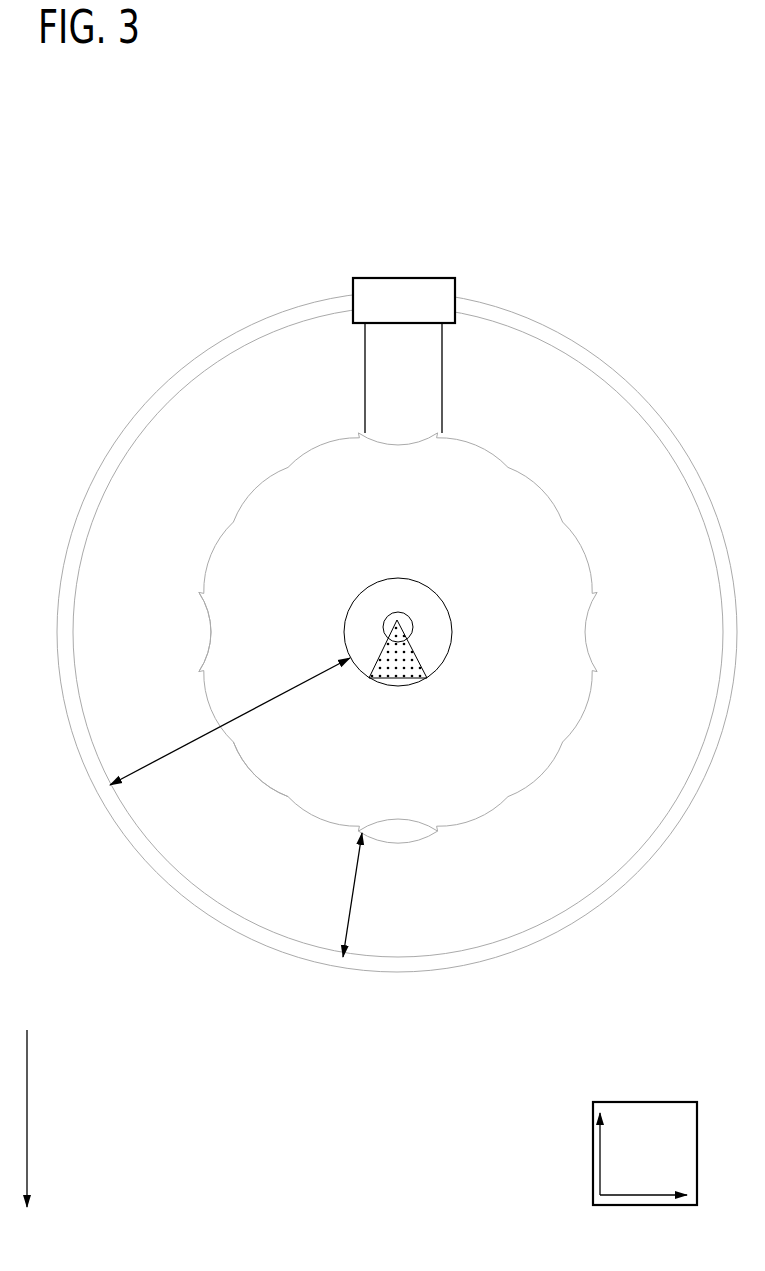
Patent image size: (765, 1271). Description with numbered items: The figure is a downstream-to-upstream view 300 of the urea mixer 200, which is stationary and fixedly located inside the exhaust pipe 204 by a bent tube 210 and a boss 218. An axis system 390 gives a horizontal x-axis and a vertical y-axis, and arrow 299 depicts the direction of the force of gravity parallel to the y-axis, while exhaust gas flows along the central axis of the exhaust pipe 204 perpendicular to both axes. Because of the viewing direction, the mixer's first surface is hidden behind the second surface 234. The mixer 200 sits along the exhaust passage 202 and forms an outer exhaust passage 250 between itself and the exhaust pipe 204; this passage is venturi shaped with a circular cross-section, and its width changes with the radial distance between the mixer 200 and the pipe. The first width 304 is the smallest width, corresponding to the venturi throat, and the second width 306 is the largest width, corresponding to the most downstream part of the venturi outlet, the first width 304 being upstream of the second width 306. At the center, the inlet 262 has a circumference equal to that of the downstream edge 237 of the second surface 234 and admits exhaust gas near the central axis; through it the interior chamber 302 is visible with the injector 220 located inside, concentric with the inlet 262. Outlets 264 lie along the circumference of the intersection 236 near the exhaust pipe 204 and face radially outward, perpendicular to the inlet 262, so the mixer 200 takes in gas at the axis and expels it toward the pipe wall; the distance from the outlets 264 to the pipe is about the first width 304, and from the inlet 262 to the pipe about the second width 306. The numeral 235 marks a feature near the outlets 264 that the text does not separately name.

The urea mixer 200 is at (541, 427).
The exhaust passage 202 is at (258, 367).
The exhaust pipe 204 is at (608, 367).
The bent tube 210 is at (461, 373).
The boss 218 is at (388, 312).
The injector 220 is at (417, 624).
The second surface 234 is at (382, 540).
The concave recess 235 is at (364, 830).
The intersection 236 is at (279, 809).
The downstream edge 237 is at (345, 627).
The outer exhaust passage 250 is at (392, 900).
The inlet 262 is at (453, 677).
The outlets 264 is at (187, 627).
The arrow 299 is at (27, 1102).
The downstream-to-upstream view 300 is at (650, 167).
The interior chamber 302 is at (381, 607).
The first width 304 is at (353, 895).
The second width 306 is at (257, 708).
The axis system 390 is at (658, 1102).